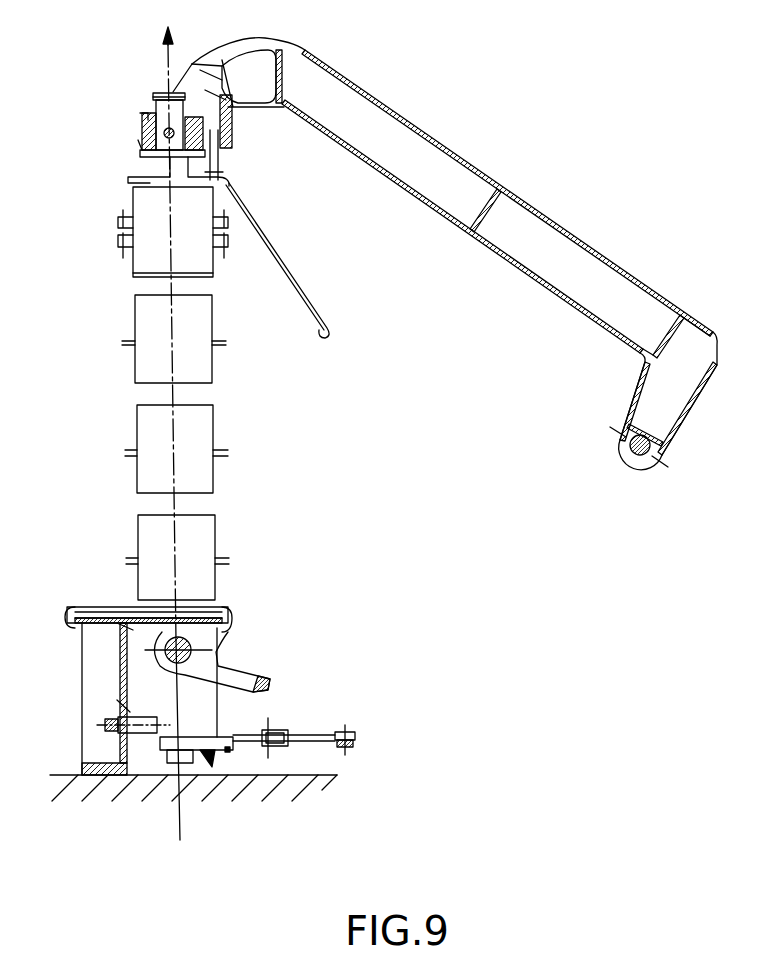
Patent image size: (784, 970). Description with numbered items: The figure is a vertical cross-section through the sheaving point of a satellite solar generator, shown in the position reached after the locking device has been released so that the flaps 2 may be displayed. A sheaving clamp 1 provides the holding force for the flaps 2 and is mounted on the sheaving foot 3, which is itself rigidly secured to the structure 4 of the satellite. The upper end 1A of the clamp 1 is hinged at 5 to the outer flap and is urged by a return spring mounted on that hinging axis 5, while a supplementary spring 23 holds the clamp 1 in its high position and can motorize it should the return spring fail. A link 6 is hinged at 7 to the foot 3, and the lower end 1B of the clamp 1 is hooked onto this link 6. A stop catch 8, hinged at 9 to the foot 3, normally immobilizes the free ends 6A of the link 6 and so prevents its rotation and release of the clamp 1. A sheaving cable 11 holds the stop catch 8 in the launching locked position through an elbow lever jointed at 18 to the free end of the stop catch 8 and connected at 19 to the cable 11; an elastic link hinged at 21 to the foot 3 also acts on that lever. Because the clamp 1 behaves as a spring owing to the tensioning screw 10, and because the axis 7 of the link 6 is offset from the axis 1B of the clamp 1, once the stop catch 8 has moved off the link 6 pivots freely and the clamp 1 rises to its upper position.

The sheaving clamp 1 is at (536, 238).
The upper end of the clamp 1A is at (200, 157).
The lower end of the clamp 1B is at (637, 458).
The flaps 2 is at (137, 365).
The sheaving foot 3 is at (120, 685).
The structure of the satellite 4 is at (68, 788).
The hinging axis 5 is at (163, 135).
The link 6 is at (218, 662).
The free ends of the link 6A is at (255, 680).
The hinge axis of the link 7 is at (168, 645).
The stop catch 8 is at (210, 768).
The hinge of the stop catch 9 is at (168, 752).
The tensioning screw 10 is at (150, 98).
The sheaving cable 11 is at (345, 748).
The joint of the elbow lever to the stop catch 18 is at (268, 728).
The connection of the elbow lever to the cable 19 is at (345, 725).
The hinge of the elastic link 21 is at (232, 752).
The supplementary spring 23 is at (323, 310).